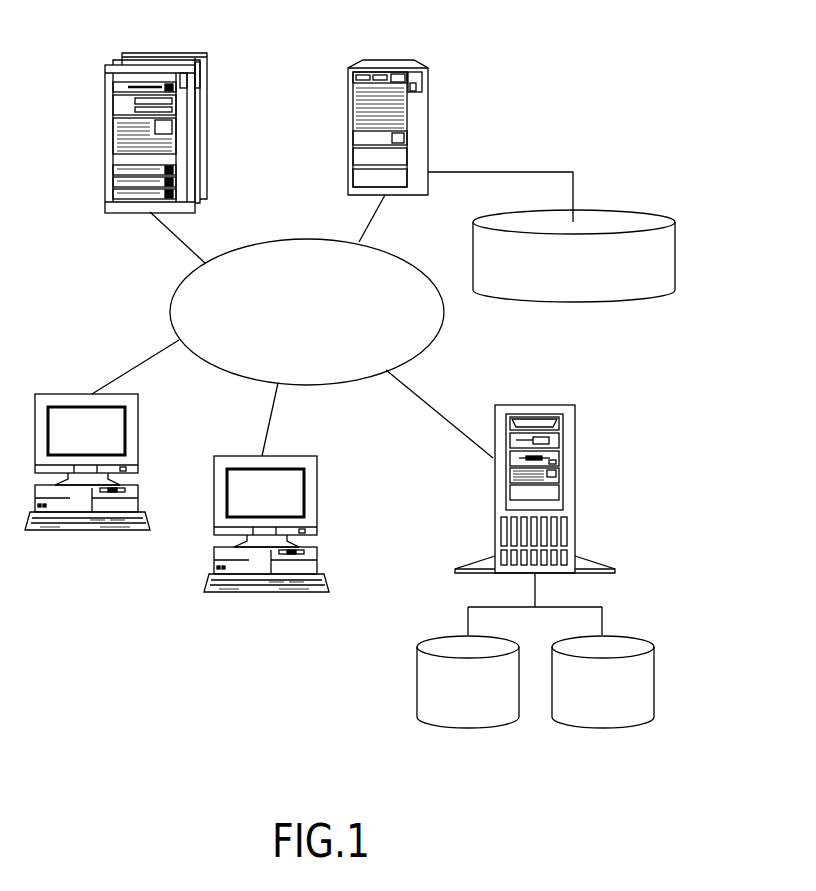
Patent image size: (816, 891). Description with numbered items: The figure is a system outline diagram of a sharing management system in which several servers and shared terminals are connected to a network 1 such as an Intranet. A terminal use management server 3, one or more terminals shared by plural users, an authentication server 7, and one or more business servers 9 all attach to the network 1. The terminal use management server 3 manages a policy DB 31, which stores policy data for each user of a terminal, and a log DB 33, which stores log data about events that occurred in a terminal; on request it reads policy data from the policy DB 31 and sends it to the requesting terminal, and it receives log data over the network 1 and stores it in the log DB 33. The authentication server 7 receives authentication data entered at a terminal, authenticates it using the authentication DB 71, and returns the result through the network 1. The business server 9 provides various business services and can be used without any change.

The network 1 is at (282, 239).
The terminal use management server 3 is at (575, 490).
The authentication server 7 is at (428, 103).
The business server 9 is at (207, 118).
The policy DB 31 is at (470, 726).
The log DB 33 is at (605, 726).
The authentication DB 71 is at (675, 253).